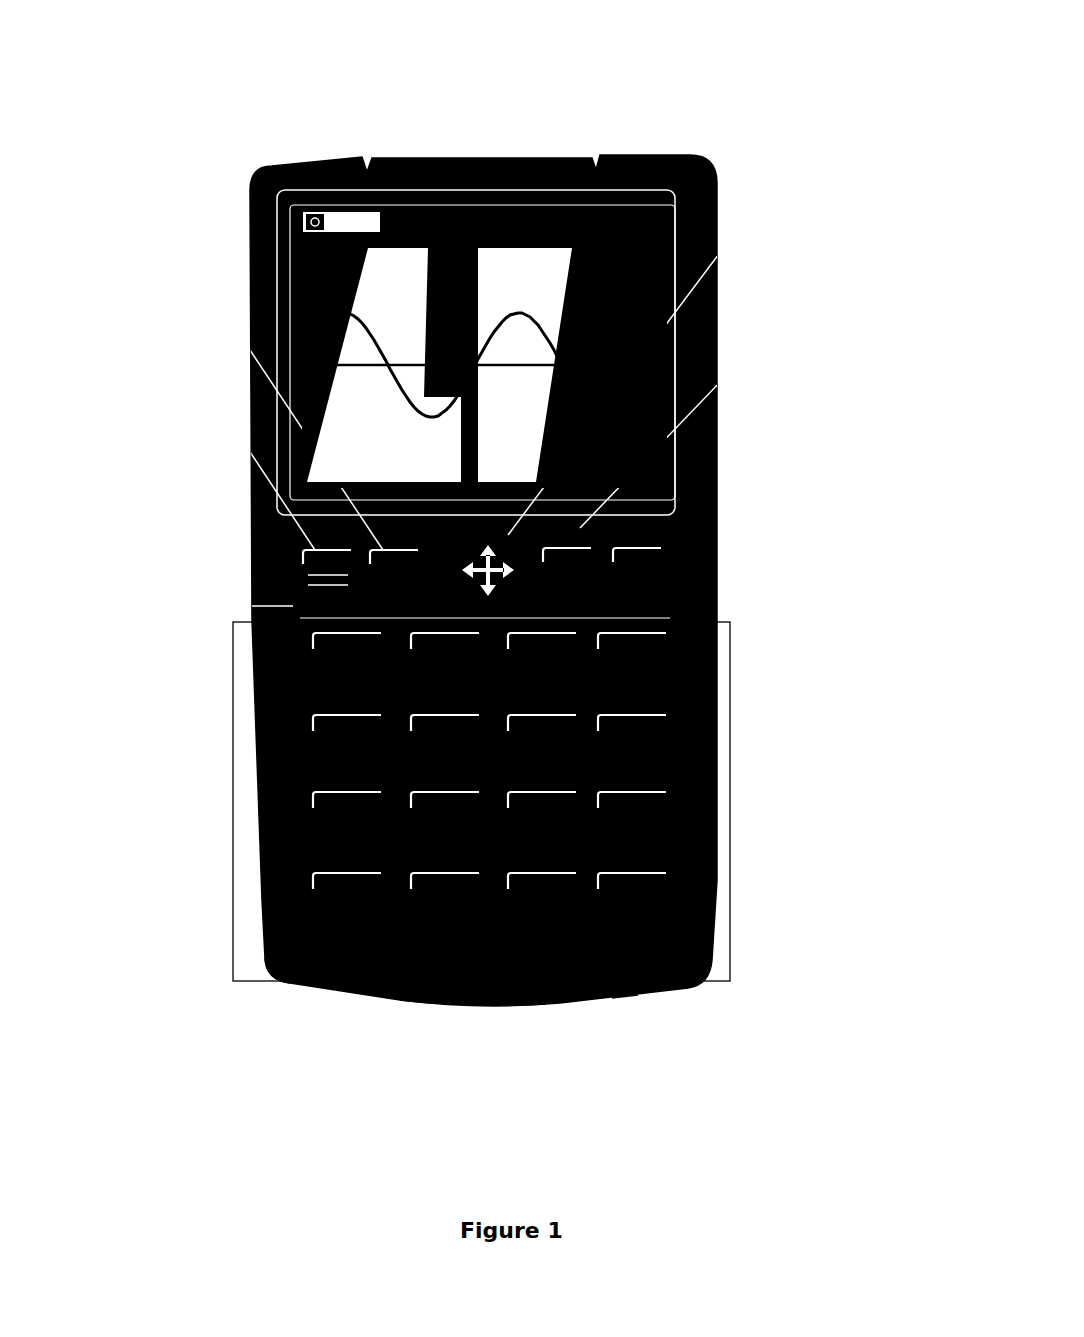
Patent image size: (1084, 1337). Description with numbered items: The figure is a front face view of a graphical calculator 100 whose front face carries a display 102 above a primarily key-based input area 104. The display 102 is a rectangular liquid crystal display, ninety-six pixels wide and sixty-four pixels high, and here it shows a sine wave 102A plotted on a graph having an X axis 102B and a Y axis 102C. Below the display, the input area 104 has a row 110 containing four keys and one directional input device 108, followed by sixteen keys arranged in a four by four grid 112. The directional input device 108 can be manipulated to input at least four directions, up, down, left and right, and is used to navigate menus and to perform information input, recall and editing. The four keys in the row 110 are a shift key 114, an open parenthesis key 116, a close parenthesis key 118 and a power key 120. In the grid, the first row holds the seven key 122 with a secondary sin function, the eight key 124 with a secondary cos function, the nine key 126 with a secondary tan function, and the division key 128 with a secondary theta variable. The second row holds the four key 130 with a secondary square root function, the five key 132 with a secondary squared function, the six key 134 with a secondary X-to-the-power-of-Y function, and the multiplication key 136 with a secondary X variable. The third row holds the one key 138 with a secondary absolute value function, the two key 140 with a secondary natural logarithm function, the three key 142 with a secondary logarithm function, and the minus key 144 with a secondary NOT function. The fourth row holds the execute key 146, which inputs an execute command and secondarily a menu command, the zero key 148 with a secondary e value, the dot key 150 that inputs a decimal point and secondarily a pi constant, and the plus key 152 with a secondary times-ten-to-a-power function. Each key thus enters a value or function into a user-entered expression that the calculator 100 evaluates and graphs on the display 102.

The graphical calculator 100 is at (747, 123).
The display 102 is at (588, 275).
The sine wave 102A is at (336, 313).
The X axis 102B is at (436, 367).
The Y axis 102C is at (474, 278).
The input area 104 is at (833, 518).
The directional input device 108 is at (508, 535).
The row 110 is at (250, 513).
The four by four grid 112 is at (260, 982).
The shift key 114 is at (315, 550).
The open parenthesis key 116 is at (383, 550).
The close parenthesis key 118 is at (580, 528).
The power key 120 is at (718, 462).
The seven key 122 is at (252, 645).
The eight key 124 is at (293, 606).
The nine key 126 is at (718, 597).
The division key 128 is at (718, 653).
The four key 130 is at (252, 737).
The five key 132 is at (252, 678).
The six key 134 is at (718, 682).
The multiplication key 136 is at (718, 717).
The one key 138 is at (252, 811).
The two key 140 is at (252, 763).
The three key 142 is at (718, 753).
The minus key 144 is at (718, 783).
The execute key 146 is at (263, 915).
The zero key 148 is at (415, 1001).
The dot key 150 is at (533, 1004).
The plus key 152 is at (625, 997).